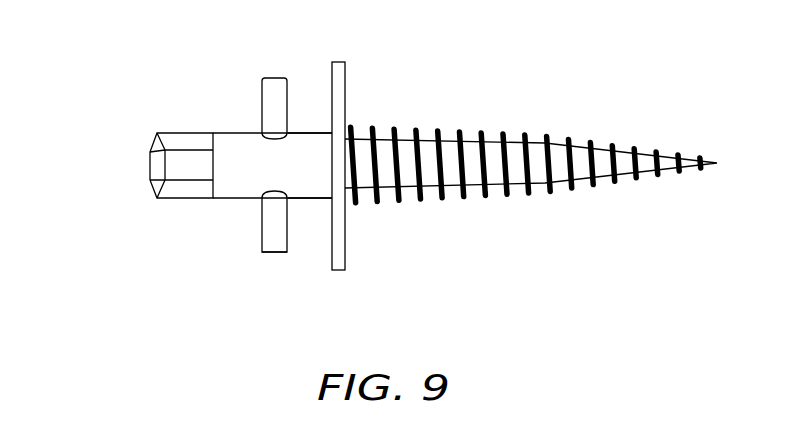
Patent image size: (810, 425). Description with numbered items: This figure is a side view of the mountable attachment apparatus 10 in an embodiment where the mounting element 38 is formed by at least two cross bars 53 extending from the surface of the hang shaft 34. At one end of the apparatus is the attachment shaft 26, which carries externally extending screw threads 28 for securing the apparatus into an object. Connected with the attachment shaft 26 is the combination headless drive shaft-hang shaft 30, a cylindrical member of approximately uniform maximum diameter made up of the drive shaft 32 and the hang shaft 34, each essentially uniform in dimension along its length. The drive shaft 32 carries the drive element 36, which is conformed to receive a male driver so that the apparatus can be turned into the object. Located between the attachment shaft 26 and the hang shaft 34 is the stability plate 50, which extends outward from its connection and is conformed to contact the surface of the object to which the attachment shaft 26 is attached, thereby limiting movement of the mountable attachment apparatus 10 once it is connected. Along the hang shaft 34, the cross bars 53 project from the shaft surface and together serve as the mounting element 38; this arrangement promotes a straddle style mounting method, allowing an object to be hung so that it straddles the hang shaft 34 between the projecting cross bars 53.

The mountable attachment apparatus 10 is at (690, 65).
The attachment shaft 26 is at (541, 186).
The screw threads 28 is at (417, 128).
The combination headless drive shaft-hang shaft 30 is at (243, 208).
The drive shaft 32 is at (178, 133).
The hang shaft 34 is at (312, 130).
The drive element 36 is at (175, 167).
The mounting element 38 is at (270, 258).
The stability plate 50 is at (345, 272).
The cross bars 53 is at (262, 100).